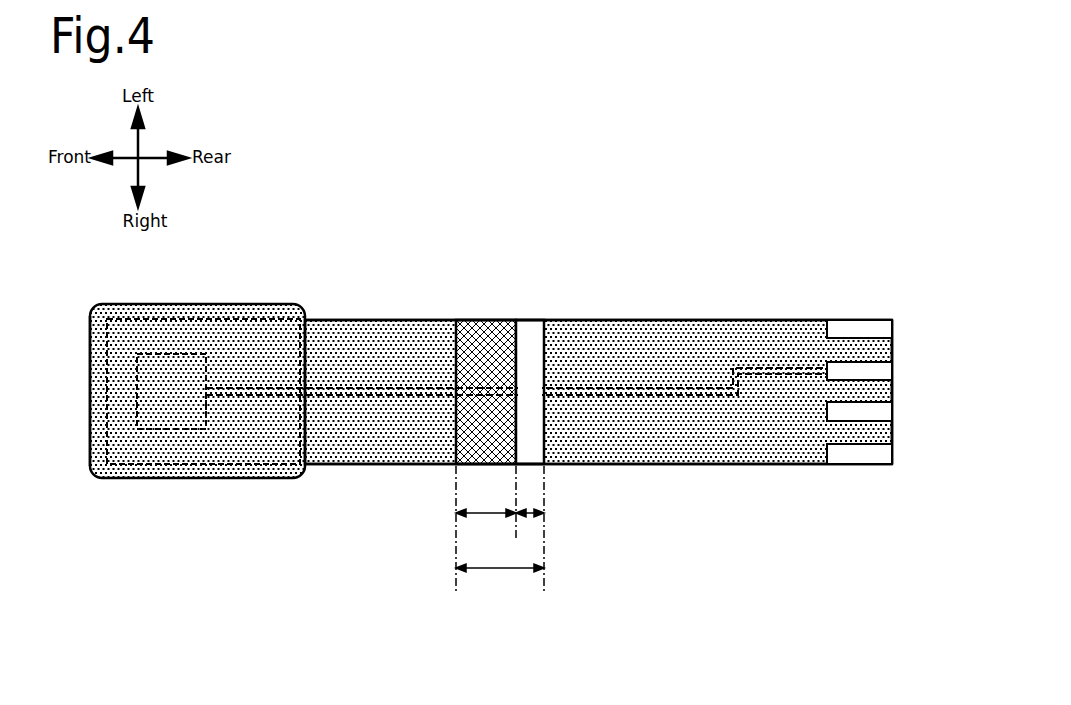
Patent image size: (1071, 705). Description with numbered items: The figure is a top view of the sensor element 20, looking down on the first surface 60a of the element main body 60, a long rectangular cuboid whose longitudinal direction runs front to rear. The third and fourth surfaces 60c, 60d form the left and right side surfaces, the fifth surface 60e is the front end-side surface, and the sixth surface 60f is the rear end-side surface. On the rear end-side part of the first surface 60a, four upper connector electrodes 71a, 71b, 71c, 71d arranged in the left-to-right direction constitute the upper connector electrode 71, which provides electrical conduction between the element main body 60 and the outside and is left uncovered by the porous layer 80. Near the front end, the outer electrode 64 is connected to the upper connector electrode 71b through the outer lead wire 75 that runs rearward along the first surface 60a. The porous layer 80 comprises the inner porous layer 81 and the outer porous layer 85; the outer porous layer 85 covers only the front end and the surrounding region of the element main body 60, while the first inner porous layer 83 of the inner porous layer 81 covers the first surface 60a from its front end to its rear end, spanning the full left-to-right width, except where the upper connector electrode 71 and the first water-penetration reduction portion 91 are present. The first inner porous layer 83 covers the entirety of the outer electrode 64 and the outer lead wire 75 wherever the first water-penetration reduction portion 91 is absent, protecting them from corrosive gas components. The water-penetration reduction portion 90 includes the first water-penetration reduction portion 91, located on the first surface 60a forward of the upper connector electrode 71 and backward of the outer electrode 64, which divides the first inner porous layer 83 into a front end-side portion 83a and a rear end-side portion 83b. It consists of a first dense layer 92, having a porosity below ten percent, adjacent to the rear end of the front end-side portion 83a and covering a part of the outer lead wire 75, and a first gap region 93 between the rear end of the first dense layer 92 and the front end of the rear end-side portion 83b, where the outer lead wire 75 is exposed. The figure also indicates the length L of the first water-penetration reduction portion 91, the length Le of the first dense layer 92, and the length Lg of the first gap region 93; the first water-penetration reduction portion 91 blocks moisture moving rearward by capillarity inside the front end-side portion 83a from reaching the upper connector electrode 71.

The sensor element 20 is at (766, 121).
The porous layer 80 is at (243, 171).
The outer porous layer 85 is at (263, 320).
The inner porous layer 81 is at (343, 204).
The first inner porous layer 83 is at (402, 252).
The front end-side portion 83a is at (418, 330).
The rear end-side portion 83b is at (612, 320).
The outer lead wire 75 is at (323, 386).
The outer electrode 64 is at (172, 353).
The element main body 60 is at (737, 298).
The first surface 60a is at (540, 448).
The third surface 60c is at (672, 320).
The fourth surface 60d is at (675, 465).
The fifth surface 60e is at (90, 402).
The sixth surface 60f is at (896, 392).
The water-penetration reduction portion 90 is at (498, 210).
The first water-penetration reduction portion 91 is at (535, 261).
The first dense layer 92 is at (492, 318).
The first gap region 93 is at (545, 318).
The upper connector electrode 71 is at (889, 288).
The upper connector electrode 71a is at (896, 329).
The upper connector electrode 71b is at (896, 371).
The upper connector electrode 71c is at (896, 414).
The upper connector electrode 71d is at (896, 450).